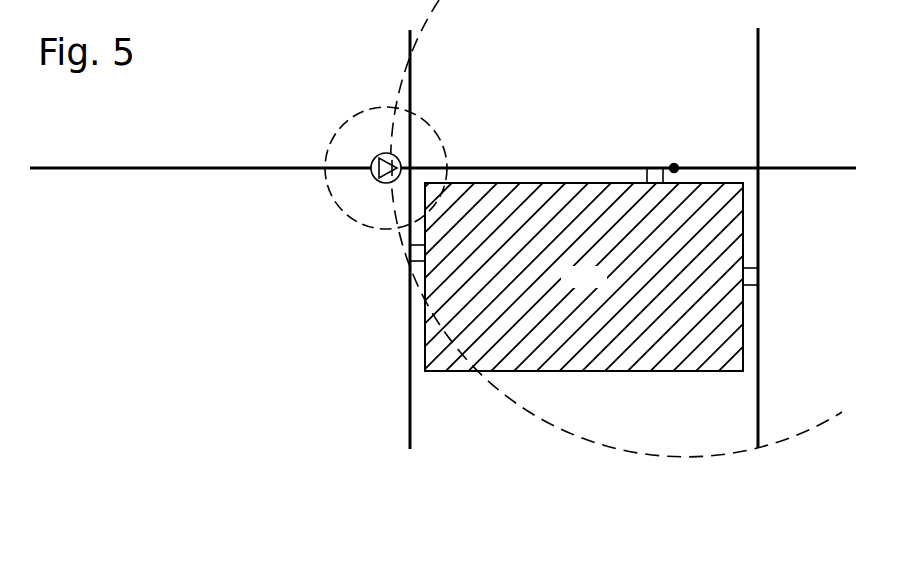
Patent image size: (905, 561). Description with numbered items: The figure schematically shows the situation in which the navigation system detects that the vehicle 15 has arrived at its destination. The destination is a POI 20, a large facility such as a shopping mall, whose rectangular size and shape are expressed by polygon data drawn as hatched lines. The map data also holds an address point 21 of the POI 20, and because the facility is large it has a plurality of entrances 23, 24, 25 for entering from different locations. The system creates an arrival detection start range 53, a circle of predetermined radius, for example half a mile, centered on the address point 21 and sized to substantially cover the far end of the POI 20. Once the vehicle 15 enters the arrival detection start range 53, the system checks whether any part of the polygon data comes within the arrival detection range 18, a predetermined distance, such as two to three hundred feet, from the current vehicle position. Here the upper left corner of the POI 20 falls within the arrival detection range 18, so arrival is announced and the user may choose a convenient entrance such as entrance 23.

The vehicle 15 is at (381, 152).
The arrival detection range 18 is at (362, 112).
The POI (point of interest) 20 is at (602, 366).
The address point 21 is at (677, 164).
The entrance 23 is at (408, 262).
The entrance 24 is at (654, 166).
The entrance 25 is at (752, 272).
The arrival detection start range 53 is at (527, 408).